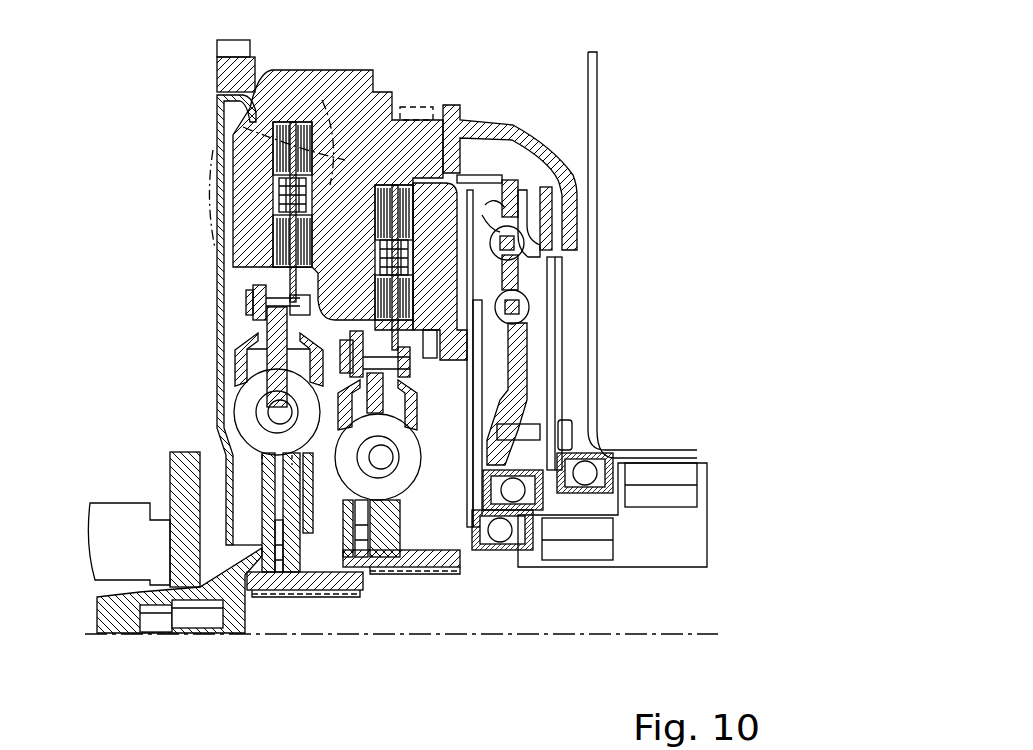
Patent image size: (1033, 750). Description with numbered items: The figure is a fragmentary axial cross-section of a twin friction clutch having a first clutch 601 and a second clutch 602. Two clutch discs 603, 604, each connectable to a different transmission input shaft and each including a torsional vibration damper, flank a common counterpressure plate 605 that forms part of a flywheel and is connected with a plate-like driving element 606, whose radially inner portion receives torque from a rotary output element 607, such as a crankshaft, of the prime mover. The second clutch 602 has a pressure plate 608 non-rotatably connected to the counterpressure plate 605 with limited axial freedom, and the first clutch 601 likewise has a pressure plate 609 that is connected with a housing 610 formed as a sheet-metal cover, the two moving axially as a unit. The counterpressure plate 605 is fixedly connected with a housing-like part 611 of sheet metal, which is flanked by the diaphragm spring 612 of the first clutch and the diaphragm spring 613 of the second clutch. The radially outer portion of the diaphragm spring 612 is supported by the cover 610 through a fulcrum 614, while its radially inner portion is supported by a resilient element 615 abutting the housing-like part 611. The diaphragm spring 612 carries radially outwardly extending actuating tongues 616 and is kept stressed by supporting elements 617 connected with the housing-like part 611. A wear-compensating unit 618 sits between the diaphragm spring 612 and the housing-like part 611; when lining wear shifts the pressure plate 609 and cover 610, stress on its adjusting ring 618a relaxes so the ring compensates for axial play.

The first clutch 601 is at (230, 123).
The second clutch 602 is at (338, 278).
The clutch disc 603 is at (293, 580).
The clutch disc 604 is at (422, 568).
The counterpressure plate 605 is at (342, 143).
The plate-like driving element 606 is at (215, 350).
The rotary output element 607 is at (117, 520).
The pressure plate 608 is at (433, 190).
The pressure plate 609 is at (243, 210).
The housing 610 is at (532, 147).
The housing-like part 611 is at (528, 372).
The diaphragm spring 612 is at (552, 260).
The diaphragm spring 613 is at (470, 537).
The fulcrum 614 is at (558, 188).
The resilient element 615 is at (530, 223).
The actuating tongues 616 is at (558, 408).
The supporting elements 617 is at (563, 433).
The wear-compensating unit 618 is at (522, 300).
The adjusting ring 618a is at (542, 280).